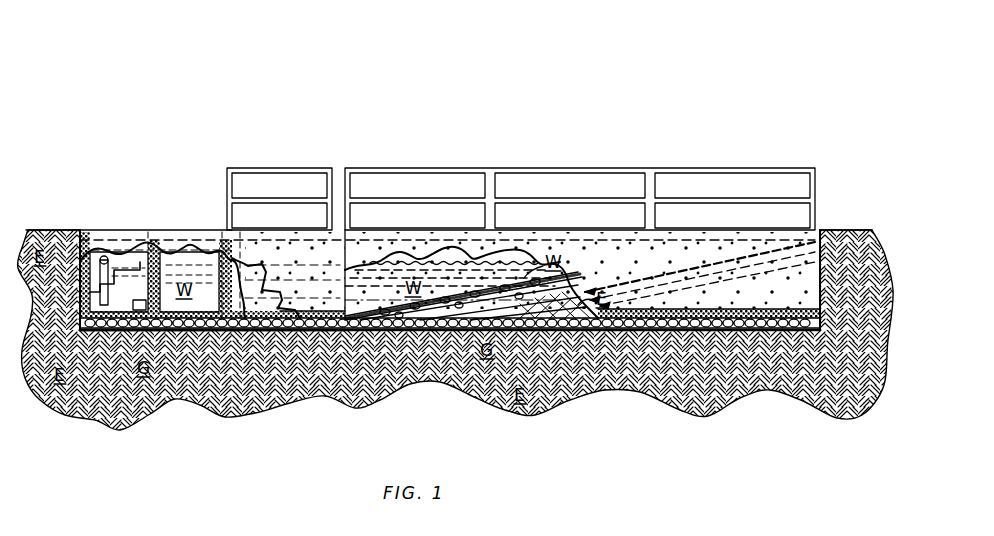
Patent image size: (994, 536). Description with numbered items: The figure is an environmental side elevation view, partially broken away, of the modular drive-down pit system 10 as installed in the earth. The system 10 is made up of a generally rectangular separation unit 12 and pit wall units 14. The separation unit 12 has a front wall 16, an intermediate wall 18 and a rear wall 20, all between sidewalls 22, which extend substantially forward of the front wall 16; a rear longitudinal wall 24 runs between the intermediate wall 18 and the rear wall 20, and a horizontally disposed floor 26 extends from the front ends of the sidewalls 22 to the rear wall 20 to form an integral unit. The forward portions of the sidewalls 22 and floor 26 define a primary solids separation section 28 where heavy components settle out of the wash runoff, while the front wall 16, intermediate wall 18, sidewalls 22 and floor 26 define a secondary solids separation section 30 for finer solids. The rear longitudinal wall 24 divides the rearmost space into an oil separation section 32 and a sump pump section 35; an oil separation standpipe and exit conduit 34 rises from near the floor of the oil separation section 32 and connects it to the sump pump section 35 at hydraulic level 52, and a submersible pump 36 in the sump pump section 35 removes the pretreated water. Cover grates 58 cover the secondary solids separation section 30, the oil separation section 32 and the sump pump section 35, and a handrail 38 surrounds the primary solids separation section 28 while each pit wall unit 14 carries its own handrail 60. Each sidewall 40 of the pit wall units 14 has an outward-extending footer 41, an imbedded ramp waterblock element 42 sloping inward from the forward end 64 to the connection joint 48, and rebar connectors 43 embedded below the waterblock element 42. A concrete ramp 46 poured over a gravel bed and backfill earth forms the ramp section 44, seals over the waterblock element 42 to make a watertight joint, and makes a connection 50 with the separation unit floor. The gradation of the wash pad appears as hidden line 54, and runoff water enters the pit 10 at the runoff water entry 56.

The modular drive-down pit system 10 is at (692, 128).
The separation unit 12 is at (150, 213).
The pit wall units 14 is at (803, 351).
The front wall 16 is at (194, 330).
The intermediate wall 18 is at (157, 237).
The rear wall 20 is at (77, 232).
The sidewalls 22 is at (286, 287).
The rear longitudinal wall 24 is at (89, 326).
The floor 26 is at (156, 357).
The primary solids separation section 28 is at (257, 330).
The secondary solids separation section 30 is at (151, 322).
The oil separation section 32 is at (124, 250).
The oil separation standpipe and exit conduit 34 is at (86, 244).
The sump pump section 35 is at (78, 320).
The submersible pump 36 is at (118, 328).
The handrail 38 is at (312, 167).
The sidewall 40 is at (822, 267).
The footer 41 is at (618, 328).
The ramp waterblock element 42 is at (490, 328).
The rebar connectors 43 is at (420, 320).
The ramp section 44 is at (474, 284).
The concrete ramp 46 is at (387, 310).
The connection joint 48 is at (342, 248).
The connection 50 is at (328, 332).
The hydraulic level 52 is at (222, 232).
The hidden line 54 is at (725, 243).
The runoff water entry 56 is at (823, 240).
The separation unit cover grates 58 is at (143, 232).
The handrail 60 is at (800, 166).
The forward end 64 is at (822, 292).